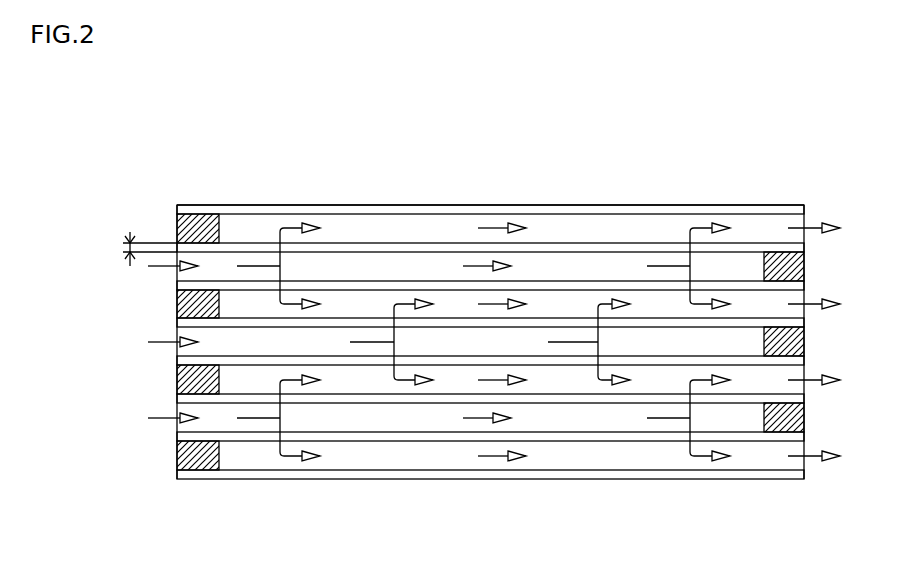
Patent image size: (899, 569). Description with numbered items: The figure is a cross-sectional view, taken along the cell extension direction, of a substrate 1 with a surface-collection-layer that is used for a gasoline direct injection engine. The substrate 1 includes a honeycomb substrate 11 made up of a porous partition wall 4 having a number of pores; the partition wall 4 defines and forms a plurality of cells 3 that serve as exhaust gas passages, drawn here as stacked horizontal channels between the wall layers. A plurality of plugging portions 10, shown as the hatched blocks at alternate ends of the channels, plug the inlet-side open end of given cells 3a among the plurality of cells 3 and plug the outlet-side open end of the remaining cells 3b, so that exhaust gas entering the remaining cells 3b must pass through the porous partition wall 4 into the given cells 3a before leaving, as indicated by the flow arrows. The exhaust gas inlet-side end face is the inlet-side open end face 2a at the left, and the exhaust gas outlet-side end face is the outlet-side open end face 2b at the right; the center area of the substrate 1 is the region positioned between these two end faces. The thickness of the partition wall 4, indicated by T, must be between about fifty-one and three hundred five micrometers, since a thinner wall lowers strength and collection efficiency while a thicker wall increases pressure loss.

The substrate with a surface-collection-layer 1 is at (101, 92).
The inlet-side open end face 2a is at (176, 190).
The outlet-side open end face 2b is at (802, 190).
The cells 3 is at (494, 380).
The given cells 3a is at (606, 233).
The remaining cells 3b is at (566, 265).
The partition wall 4 is at (409, 400).
The plugging portions 10 is at (177, 388).
The honeycomb substrate 11 is at (382, 181).
The thickness of the partition wall T is at (125, 244).